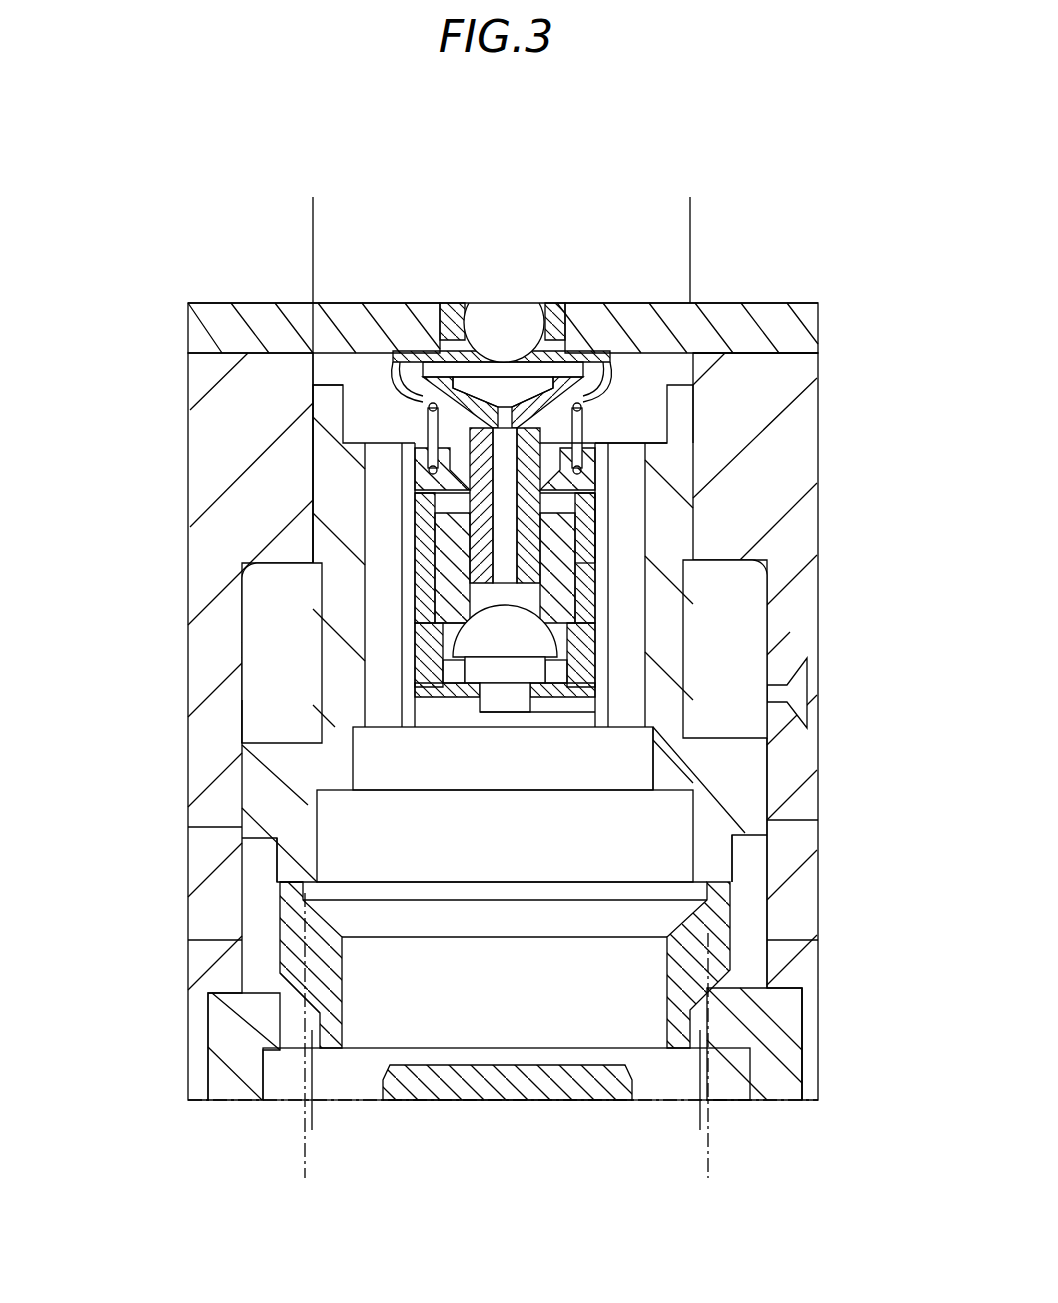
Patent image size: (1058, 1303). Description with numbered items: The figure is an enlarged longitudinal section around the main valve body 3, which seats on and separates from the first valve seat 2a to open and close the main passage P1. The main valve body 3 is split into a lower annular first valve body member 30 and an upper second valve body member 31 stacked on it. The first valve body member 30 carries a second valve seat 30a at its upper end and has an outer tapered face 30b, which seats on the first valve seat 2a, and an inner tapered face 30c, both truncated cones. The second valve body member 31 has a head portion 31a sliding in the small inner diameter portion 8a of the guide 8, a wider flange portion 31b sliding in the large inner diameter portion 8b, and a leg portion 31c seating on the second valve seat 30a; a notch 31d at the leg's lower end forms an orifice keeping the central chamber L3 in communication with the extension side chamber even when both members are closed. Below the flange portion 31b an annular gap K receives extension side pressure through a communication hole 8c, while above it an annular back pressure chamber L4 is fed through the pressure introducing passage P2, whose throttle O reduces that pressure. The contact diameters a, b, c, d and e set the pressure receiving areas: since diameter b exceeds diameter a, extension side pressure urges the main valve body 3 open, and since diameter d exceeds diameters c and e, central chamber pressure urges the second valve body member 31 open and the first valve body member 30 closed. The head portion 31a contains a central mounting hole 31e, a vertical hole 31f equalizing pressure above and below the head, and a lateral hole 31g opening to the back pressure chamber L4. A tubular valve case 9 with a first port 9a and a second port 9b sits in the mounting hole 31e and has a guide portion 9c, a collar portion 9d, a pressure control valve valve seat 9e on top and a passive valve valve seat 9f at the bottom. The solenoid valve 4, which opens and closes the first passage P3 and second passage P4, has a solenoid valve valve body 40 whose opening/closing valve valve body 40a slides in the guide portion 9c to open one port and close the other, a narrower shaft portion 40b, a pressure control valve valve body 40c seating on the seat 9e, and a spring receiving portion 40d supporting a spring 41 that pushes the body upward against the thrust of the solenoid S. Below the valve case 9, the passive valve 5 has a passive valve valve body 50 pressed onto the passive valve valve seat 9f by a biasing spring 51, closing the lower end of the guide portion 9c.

The first valve seat 2a is at (332, 995).
The main valve body 3 is at (768, 778).
The solenoid valve 4 is at (362, 390).
The passive valve 5 is at (472, 700).
The guide 8 is at (818, 630).
The small inner diameter portion 8a is at (700, 398).
The large inner diameter portion 8b is at (242, 650).
The communication hole 8c is at (800, 925).
The valve case 9 is at (767, 578).
The first port 9a is at (413, 472).
The second port 9b is at (578, 572).
The guide portion 9c is at (600, 505).
The collar portion 9d is at (600, 480).
The pressure control valve valve seat 9e is at (584, 446).
The passive valve valve seat 9f is at (450, 622).
The first valve body member 30 is at (280, 943).
The second valve seat 30a is at (278, 887).
The tapered face 30b is at (262, 985).
The tapered face 30c is at (342, 900).
The second valve body member 31 is at (250, 780).
The head portion 31a is at (312, 458).
The flange portion 31b is at (242, 725).
The leg portion 31c is at (275, 868).
The notch 31d is at (737, 880).
The mounting hole 31e is at (560, 715).
The vertical hole 31f is at (338, 398).
The lateral hole 31g is at (665, 607).
The solenoid valve valve body 40 is at (402, 518).
The opening/closing valve valve body 40a is at (600, 540).
The shaft portion 40b is at (690, 450).
The pressure control valve valve body 40c is at (425, 435).
The spring receiving portion 40d is at (612, 400).
The spring 41 is at (427, 405).
The passive valve valve body 50 is at (470, 600).
The biasing spring 51 is at (423, 700).
The solenoid S is at (264, 304).
The main passage P1 is at (802, 836).
The pressure introducing passage P2 is at (808, 690).
The first passage P3 is at (378, 686).
The second passage P4 is at (505, 727).
The throttle O is at (765, 695).
The annular gap K is at (881, 972).
The central chamber L3 is at (470, 861).
The back pressure chamber L4 is at (738, 678).
The diameter a is at (305, 1166).
The diameter b is at (242, 805).
The diameter c is at (313, 213).
The diameter d is at (305, 955).
The diameter e is at (312, 1115).